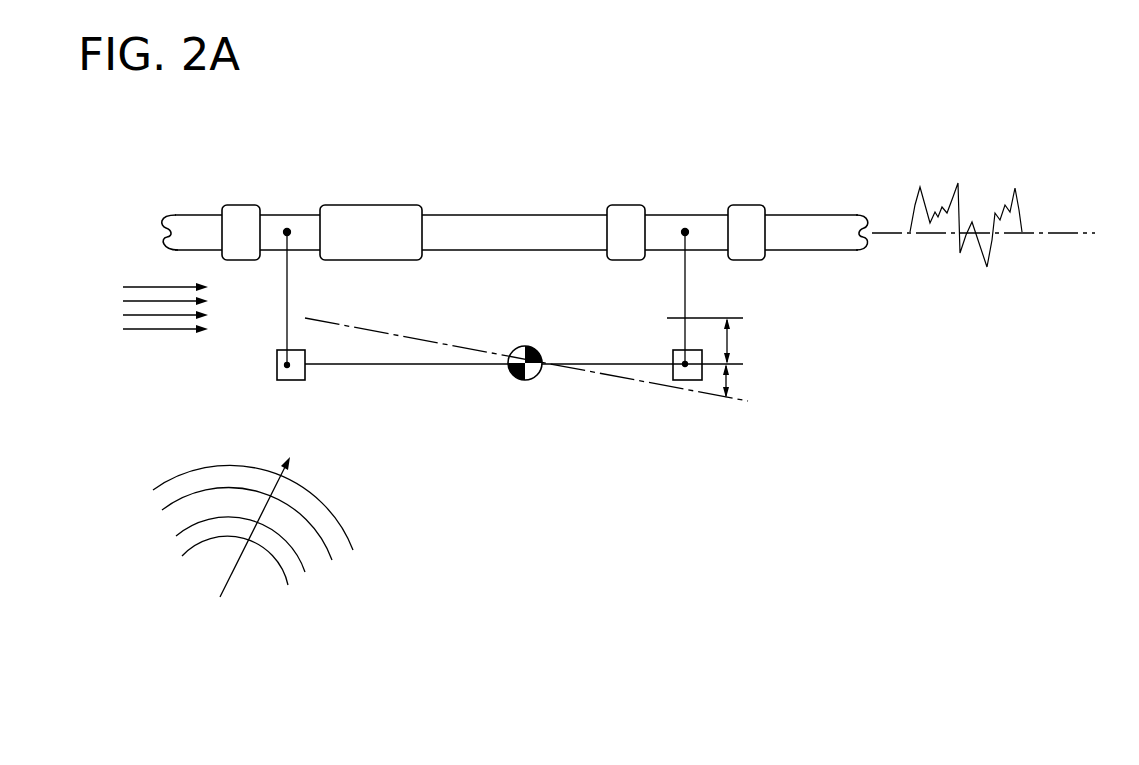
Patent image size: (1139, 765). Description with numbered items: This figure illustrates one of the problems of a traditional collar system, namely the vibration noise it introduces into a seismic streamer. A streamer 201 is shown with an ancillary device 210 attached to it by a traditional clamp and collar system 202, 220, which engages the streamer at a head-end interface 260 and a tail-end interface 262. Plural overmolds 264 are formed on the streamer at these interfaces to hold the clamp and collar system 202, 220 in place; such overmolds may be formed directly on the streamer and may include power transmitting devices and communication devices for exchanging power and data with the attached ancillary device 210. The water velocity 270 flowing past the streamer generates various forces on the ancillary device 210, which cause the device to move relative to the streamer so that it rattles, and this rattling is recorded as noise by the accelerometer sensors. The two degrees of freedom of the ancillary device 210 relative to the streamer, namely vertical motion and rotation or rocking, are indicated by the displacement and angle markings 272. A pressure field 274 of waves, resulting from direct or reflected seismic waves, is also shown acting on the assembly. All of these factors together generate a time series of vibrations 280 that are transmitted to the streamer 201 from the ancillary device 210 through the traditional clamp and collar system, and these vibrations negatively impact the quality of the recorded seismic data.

The streamer 201 is at (804, 203).
The overmolds 264 is at (245, 207).
The head-end interface 260 is at (290, 206).
The tail-end interface 262 is at (676, 206).
The time series of vibrations 280 is at (957, 185).
The water velocity 270 is at (150, 285).
The clamp 202 is at (430, 340).
The collar 220 is at (278, 376).
The ancillary device 210 is at (516, 377).
The two degrees of freedom 272 is at (790, 345).
The pressure field 274 is at (270, 563).